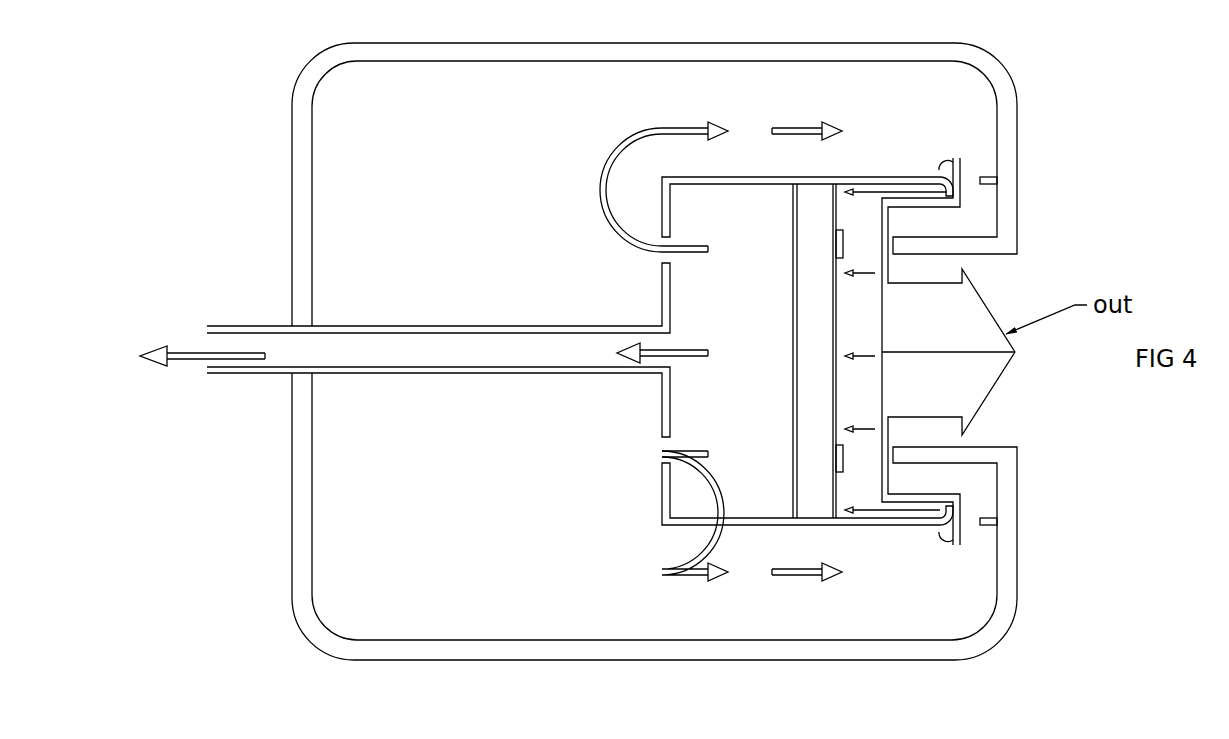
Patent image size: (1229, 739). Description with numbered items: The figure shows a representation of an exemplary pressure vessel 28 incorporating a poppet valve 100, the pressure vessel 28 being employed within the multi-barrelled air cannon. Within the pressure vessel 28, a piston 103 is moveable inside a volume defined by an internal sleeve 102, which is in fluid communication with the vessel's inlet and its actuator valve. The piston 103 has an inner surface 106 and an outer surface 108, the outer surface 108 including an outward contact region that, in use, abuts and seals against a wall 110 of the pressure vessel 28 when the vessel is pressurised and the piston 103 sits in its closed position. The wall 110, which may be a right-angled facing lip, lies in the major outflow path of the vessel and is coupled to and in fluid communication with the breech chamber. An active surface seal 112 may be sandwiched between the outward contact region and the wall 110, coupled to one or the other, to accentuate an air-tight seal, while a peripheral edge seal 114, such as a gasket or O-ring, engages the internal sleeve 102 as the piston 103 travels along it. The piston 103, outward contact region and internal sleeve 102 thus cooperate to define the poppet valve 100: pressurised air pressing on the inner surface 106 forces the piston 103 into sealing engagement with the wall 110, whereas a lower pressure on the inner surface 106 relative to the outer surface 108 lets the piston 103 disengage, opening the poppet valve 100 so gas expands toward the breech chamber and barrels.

The pressure vessel 28 is at (1012, 612).
The poppet valve 100 is at (776, 499).
The internal sleeve 102 is at (768, 186).
The piston 103 is at (810, 356).
The inner surface 106 is at (794, 284).
The outer surface 108 is at (836, 213).
The wall 110 is at (969, 453).
The active surface seal 112 is at (838, 456).
The peripheral edge seal 114 is at (819, 527).